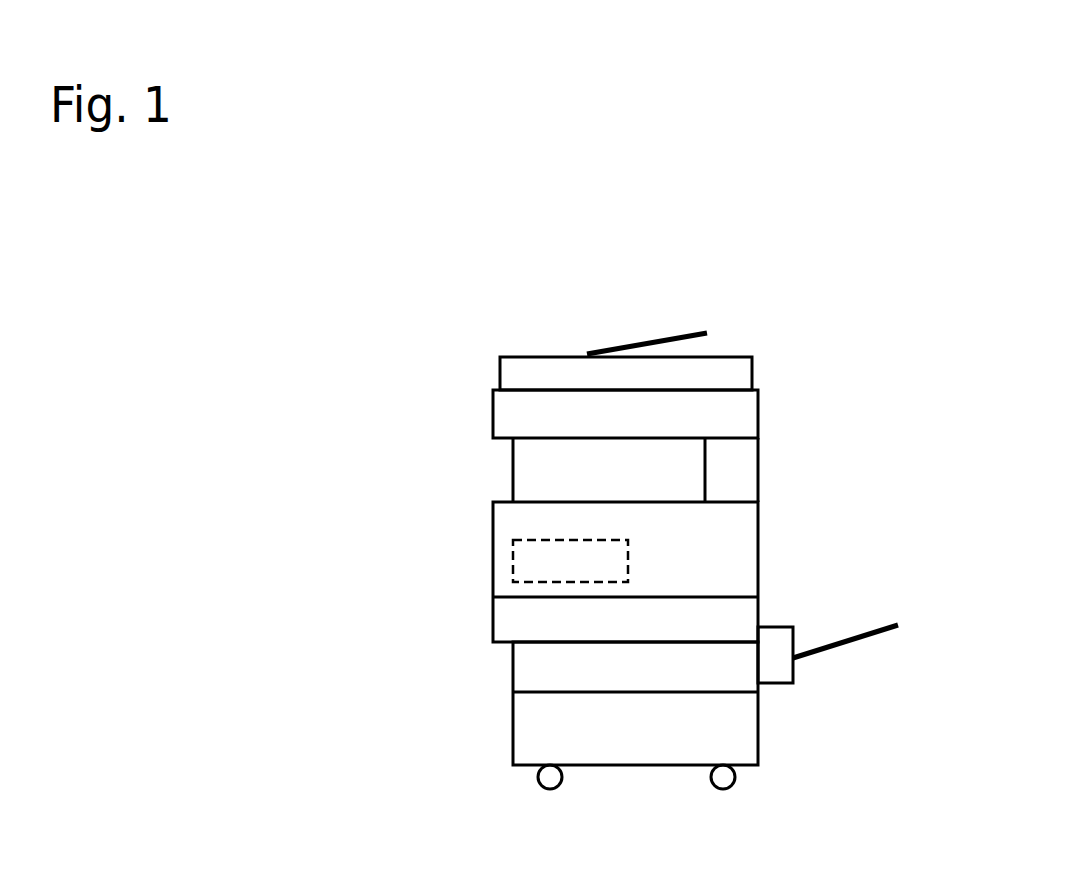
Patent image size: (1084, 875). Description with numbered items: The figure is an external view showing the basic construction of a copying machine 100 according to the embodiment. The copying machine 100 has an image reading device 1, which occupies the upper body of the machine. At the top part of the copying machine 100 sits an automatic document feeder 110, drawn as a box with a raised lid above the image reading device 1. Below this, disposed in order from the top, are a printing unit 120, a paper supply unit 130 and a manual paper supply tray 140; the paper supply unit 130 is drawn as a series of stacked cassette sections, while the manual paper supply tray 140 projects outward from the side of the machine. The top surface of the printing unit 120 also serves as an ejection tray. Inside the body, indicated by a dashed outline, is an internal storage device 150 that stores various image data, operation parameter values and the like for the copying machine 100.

The image reading device 1 is at (512, 417).
The copying machine 100 is at (738, 258).
The automatic document feeder 110 is at (742, 373).
The printing unit 120 is at (742, 522).
The paper supply unit 130 is at (743, 705).
The manual paper supply tray 140 is at (857, 643).
The internal storage device 150 is at (628, 563).